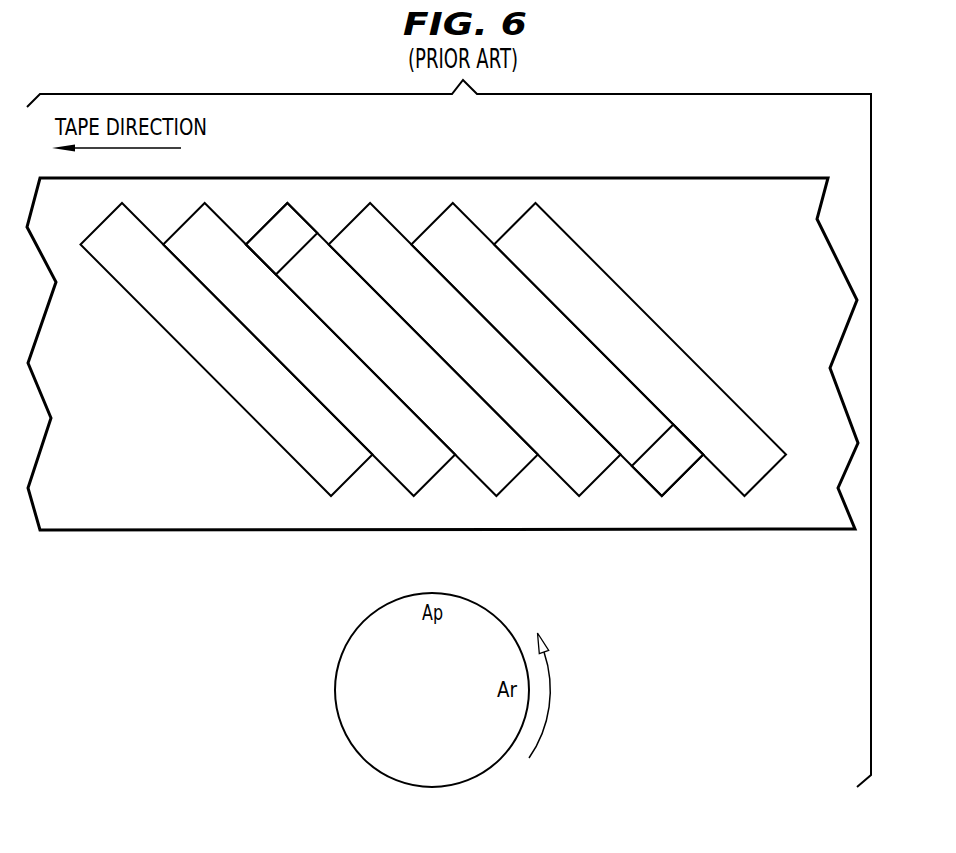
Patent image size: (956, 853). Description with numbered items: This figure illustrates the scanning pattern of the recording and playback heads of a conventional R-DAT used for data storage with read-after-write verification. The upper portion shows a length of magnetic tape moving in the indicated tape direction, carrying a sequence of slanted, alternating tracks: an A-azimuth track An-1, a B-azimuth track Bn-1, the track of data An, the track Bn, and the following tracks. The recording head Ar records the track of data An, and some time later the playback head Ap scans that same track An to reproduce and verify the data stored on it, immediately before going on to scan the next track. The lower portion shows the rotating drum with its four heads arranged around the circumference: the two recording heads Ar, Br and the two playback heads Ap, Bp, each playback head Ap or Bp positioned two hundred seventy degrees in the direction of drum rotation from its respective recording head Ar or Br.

The track An-1 is at (227, 349).
The track Bn-1 is at (309, 349).
The track of data An is at (392, 349).
The track Bn is at (475, 349).
The playback head Ap is at (247, 204).
The recording head Ar is at (632, 425).
The recording head Br is at (353, 690).
The playback head Bp is at (432, 761).